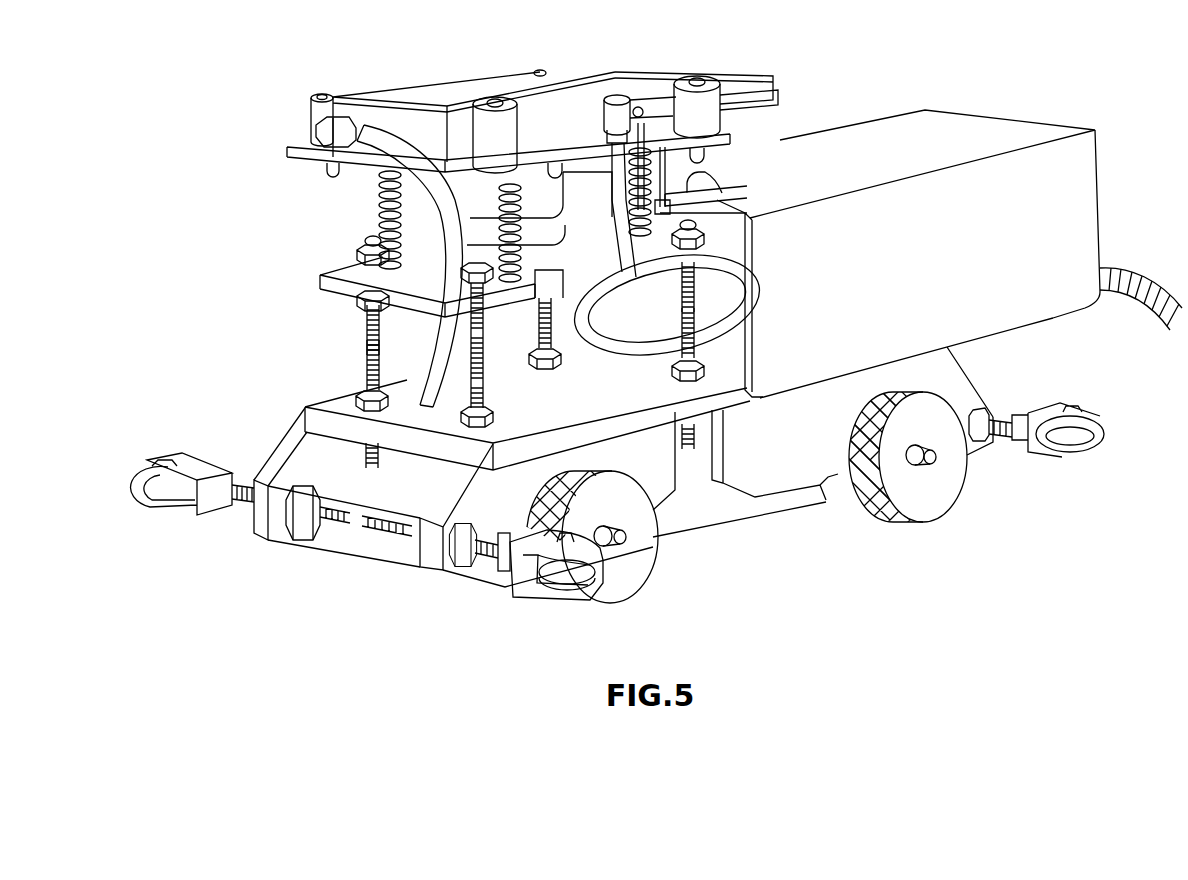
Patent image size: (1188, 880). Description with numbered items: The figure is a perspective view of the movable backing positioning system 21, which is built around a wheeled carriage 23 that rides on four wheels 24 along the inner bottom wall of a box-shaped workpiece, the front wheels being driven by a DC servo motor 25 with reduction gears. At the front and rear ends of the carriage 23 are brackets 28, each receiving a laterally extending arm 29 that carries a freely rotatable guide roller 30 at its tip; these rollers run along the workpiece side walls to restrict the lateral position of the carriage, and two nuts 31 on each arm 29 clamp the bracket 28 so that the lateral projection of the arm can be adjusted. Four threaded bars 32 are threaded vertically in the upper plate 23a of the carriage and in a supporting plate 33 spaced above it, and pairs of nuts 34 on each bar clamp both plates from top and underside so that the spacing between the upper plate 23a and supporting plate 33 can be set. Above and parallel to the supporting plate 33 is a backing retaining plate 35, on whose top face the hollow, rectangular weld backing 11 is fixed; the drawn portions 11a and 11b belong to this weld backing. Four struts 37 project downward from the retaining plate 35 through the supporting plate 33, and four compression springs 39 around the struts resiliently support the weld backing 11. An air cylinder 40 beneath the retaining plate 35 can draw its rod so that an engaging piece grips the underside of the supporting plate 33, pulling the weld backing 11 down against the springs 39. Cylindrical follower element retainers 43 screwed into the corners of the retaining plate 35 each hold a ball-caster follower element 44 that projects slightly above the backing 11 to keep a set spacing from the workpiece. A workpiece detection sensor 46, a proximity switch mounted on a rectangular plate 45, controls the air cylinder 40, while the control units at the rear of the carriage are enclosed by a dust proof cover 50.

The weld backing 11 is at (443, 78).
The first portion of plate 11 11a is at (407, 120).
The second portion of plate 11 11b is at (507, 73).
The movable backing positioning system 21 is at (935, 98).
The wheeled carriage 23 is at (508, 611).
The upper plate 23a is at (307, 417).
The wheels 24 is at (633, 573).
The DC servo motor 25 is at (740, 510).
The brackets 28 is at (262, 530).
The arm 29 is at (244, 483).
The guide roller 30 is at (133, 487).
The nuts 31 is at (300, 540).
The threaded bars 32 is at (363, 340).
The supporting plate 33 is at (320, 282).
The nuts 34 is at (358, 258).
The backing retaining plate 35 is at (287, 153).
The struts 37 is at (377, 183).
The compression springs 39 is at (380, 202).
The air cylinder 40 is at (480, 210).
The follower element retainers 43 is at (317, 113).
The follower element 44 is at (324, 92).
The rectangular plate 45 is at (592, 128).
The workpiece detection sensor 46 is at (643, 108).
The dust proof cover 50 is at (1073, 257).